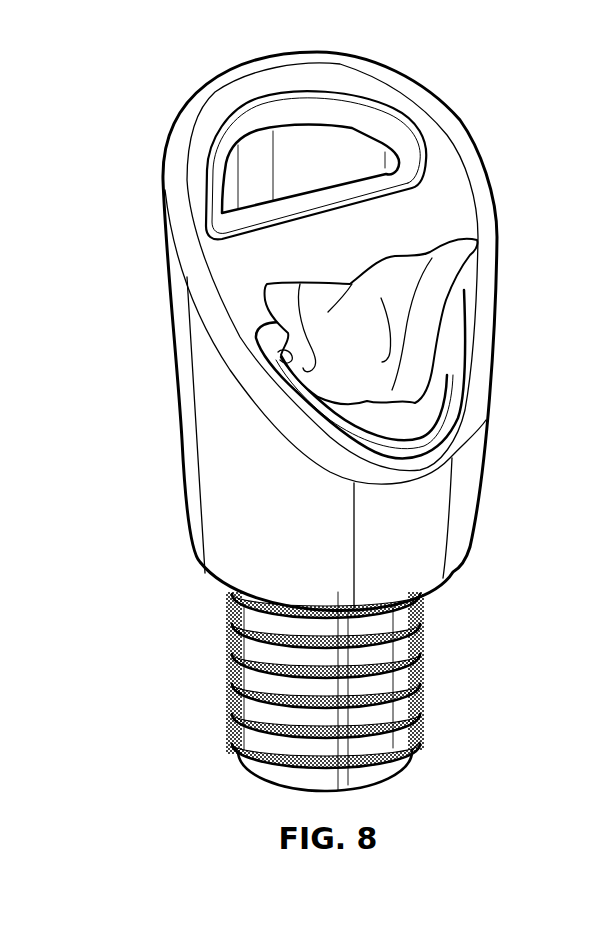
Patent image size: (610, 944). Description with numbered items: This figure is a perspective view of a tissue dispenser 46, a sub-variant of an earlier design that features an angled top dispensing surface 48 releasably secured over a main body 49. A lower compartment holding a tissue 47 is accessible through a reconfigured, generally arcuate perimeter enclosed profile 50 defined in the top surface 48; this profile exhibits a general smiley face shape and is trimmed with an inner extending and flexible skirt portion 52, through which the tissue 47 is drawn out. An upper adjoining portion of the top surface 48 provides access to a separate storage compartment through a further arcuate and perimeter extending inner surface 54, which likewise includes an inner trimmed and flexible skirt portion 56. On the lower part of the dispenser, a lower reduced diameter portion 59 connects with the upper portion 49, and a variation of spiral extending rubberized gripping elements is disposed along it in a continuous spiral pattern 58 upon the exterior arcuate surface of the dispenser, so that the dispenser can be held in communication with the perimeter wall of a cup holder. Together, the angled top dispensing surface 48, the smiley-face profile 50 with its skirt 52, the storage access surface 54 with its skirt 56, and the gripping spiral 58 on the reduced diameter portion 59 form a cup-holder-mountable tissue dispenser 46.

The tissue dispenser 46 is at (134, 210).
The tissue 47 is at (457, 260).
The angled top dispensing surface 48 is at (433, 210).
The main body 49 is at (185, 367).
The arcuate perimeter enclosed profile 50 is at (437, 418).
The inner extending and flexible skirt portion 52 is at (450, 317).
The arcuate and perimeter extending inner surface 54 is at (383, 113).
The inner trimmed and flexible skirt portion 56 is at (253, 122).
The continuous spiral pattern of rubberized gripping elements 58 is at (227, 655).
The lower reduced diameter portion 59 is at (263, 708).